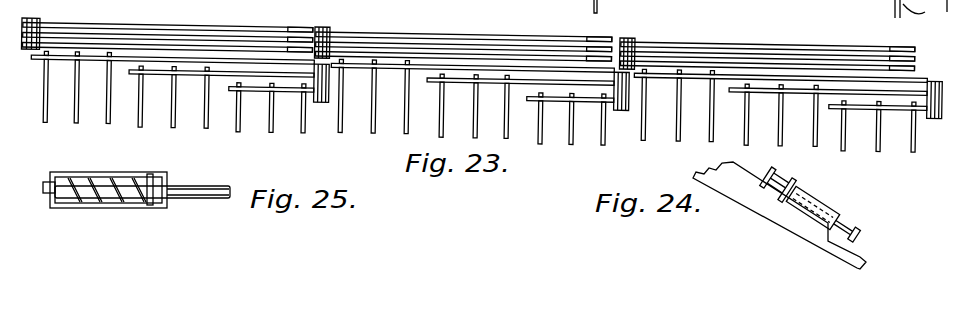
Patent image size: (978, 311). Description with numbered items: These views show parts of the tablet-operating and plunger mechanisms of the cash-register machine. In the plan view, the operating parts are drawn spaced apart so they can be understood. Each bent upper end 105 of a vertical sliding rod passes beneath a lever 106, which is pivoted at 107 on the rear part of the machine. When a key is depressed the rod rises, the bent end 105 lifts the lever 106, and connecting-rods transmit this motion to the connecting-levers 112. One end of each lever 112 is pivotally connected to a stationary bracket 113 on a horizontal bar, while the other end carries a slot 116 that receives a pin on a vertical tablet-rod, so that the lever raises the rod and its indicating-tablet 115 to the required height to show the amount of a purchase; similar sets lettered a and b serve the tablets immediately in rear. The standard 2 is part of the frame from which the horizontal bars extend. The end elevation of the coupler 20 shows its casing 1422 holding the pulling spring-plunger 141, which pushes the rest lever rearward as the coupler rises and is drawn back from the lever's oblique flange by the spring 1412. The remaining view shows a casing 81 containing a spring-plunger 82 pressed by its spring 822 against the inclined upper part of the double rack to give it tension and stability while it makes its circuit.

In FIG. 23, the stationary bracket 113 is at (38, 18).
In FIG. 23, the connecting-lever 112 is at (115, 19).
In FIG. 23, the indicating-tablet 115 is at (927, 53).
In FIG. 23, the lever 106 is at (898, 118).
In FIG. 23, the bent upper end of sliding rod 105 is at (106, 108).
In FIG. 23, the pivot 107 is at (322, 98).
In FIG. 23, the slot 116 is at (921, 9).
In FIG. 23, the standard 2 is at (953, 16).
In FIG. 25, the casing 81 is at (103, 172).
In FIG. 25, the spring-plunger 82 is at (200, 186).
In FIG. 25, the spring 822 is at (82, 172).
In FIG. 24, the coupler 20 is at (773, 219).
In FIG. 24, the casing 1422 is at (818, 201).
In FIG. 24, the spring 1412 is at (783, 176).
In FIG. 24, the pulling spring-plunger 141 is at (856, 224).